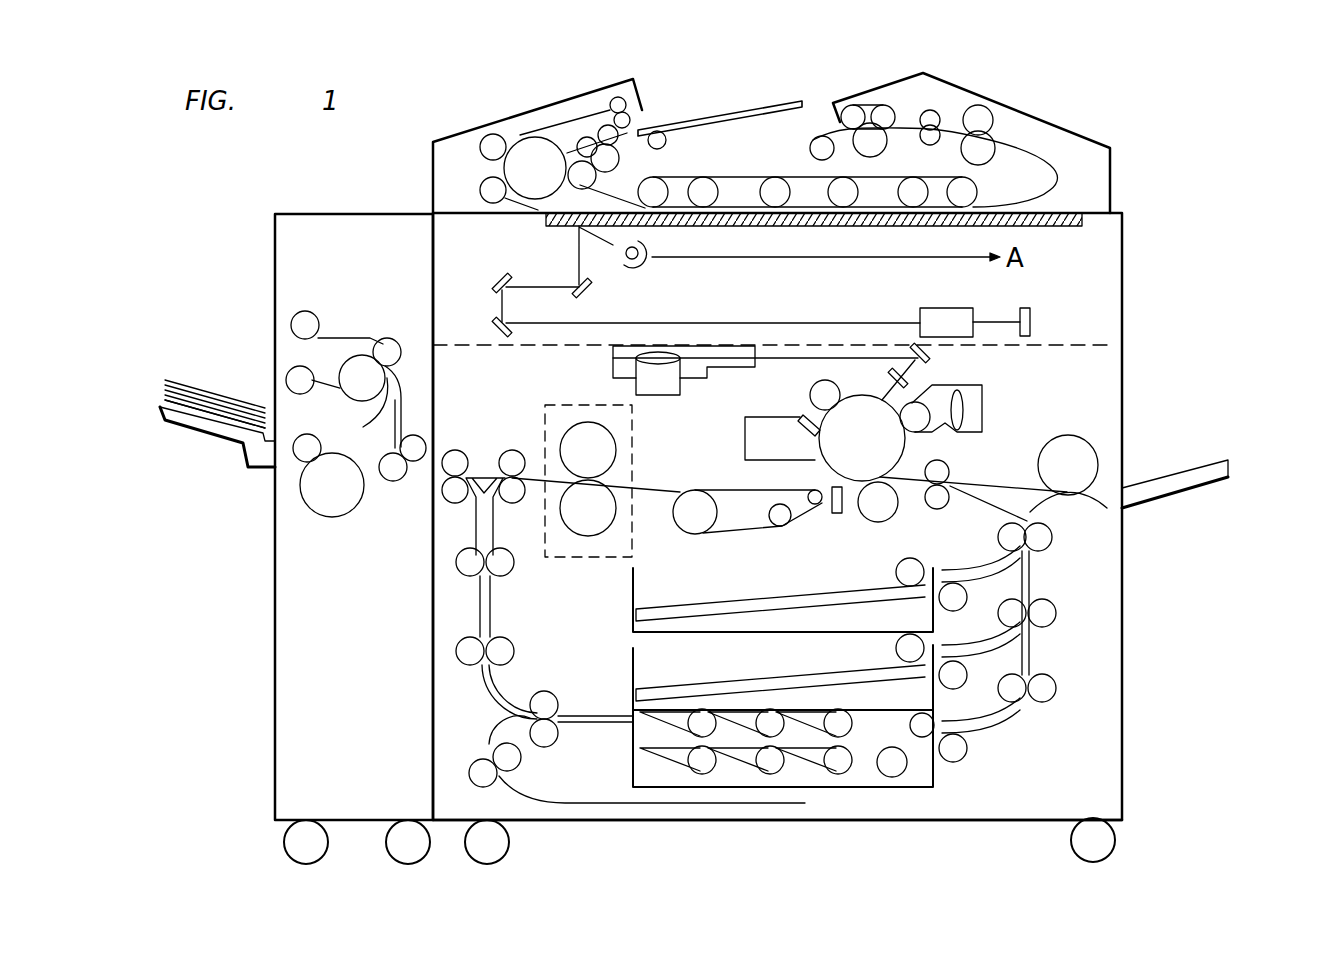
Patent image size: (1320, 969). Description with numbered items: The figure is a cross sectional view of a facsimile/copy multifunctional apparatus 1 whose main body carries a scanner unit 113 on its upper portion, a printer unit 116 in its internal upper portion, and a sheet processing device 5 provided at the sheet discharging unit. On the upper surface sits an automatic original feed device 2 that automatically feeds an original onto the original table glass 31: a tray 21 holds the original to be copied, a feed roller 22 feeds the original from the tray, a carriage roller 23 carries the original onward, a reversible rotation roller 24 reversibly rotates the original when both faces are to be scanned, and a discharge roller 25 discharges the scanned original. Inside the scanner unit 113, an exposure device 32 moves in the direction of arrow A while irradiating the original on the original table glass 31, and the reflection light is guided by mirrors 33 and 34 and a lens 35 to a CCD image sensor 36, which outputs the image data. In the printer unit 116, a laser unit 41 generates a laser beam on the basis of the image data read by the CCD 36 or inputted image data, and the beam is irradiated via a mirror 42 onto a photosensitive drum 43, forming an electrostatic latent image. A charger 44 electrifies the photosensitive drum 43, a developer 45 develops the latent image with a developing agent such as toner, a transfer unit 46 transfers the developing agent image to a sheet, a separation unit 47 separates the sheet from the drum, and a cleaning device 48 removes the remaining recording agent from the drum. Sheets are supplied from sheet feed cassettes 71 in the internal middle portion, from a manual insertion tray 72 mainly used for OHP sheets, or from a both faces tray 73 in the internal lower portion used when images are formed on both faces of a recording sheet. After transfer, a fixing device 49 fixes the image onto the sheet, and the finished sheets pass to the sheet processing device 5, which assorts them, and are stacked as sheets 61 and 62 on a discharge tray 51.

The image forming apparatus main body 1 is at (1124, 233).
The automatic original feed device 2 is at (1041, 120).
The sheet processing device 5 is at (273, 600).
The tray 21 is at (753, 110).
The feed roller 22 is at (668, 141).
The carriage roller 23 is at (620, 160).
The reversible rotation roller 24 is at (500, 170).
The discharge roller 25 is at (633, 114).
The original table glass 31 is at (1052, 224).
The exposure device 32 is at (640, 270).
The mirror 33 is at (500, 284).
The mirror 34 is at (496, 327).
The lens 35 is at (946, 308).
The CCD image sensor 36 is at (1032, 322).
The laser unit 41 is at (614, 368).
The mirror 42 is at (934, 355).
The photosensitive drum 43 is at (906, 447).
The charger 44 is at (812, 396).
The developer 45 is at (983, 413).
The transfer unit 46 is at (892, 516).
The separation unit 47 is at (838, 516).
The cleaning device 48 is at (745, 440).
The fixing device 49 is at (633, 424).
The discharge tray 51 is at (200, 425).
The sheets 61 is at (165, 400).
The sheets 62 is at (169, 380).
The sheet feed cassettes 71 is at (812, 695).
The manual insertion tray 72 is at (1232, 468).
The both faces tray 73 is at (936, 778).
The scanner unit 113 is at (1118, 286).
The printer unit 116 is at (1118, 411).